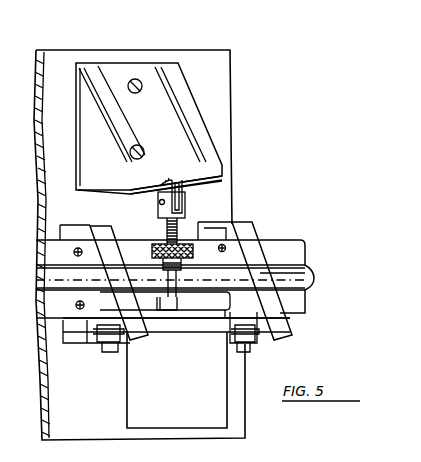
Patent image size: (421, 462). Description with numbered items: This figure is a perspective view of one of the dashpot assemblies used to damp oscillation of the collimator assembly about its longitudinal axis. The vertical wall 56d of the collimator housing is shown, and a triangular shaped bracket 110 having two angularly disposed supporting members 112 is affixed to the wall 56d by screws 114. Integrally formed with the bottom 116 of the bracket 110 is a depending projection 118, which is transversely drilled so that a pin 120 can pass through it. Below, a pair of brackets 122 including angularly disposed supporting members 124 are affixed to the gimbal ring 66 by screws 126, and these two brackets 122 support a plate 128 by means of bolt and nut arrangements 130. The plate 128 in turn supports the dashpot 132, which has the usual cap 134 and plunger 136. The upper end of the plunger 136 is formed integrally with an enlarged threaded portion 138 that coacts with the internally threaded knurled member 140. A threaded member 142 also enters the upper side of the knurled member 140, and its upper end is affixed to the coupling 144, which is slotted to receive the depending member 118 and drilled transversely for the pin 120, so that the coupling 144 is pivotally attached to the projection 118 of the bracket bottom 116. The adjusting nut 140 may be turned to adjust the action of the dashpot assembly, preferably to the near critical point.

The vertical wall 56d is at (228, 108).
The triangular shaped bracket 110 is at (83, 133).
The angularly disposed supporting members 112 is at (170, 73).
The screws 114 is at (137, 93).
The bottom of bracket 116 is at (117, 183).
The depending projection 118 is at (183, 187).
The pin 120 is at (159, 202).
The coupling 144 is at (158, 214).
The threaded member 142 is at (180, 226).
The internally threaded knurled member 140 is at (152, 250).
The enlarged threaded portion 138 is at (181, 263).
The gimbal ring 66 is at (274, 246).
The screws 126 is at (251, 211).
The angularly disposed supporting members 124 is at (96, 229).
The plunger 136 is at (171, 303).
The cap 134 is at (160, 309).
The plate 128 is at (188, 333).
The brackets 122 is at (83, 342).
The bolt and nut arrangements 130 is at (106, 353).
The dashpot 132 is at (130, 412).